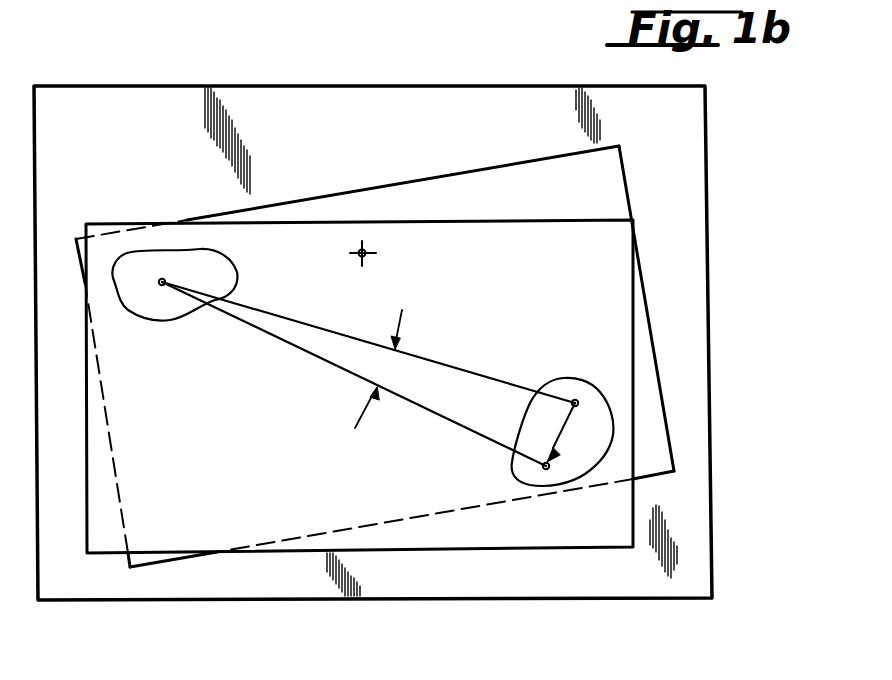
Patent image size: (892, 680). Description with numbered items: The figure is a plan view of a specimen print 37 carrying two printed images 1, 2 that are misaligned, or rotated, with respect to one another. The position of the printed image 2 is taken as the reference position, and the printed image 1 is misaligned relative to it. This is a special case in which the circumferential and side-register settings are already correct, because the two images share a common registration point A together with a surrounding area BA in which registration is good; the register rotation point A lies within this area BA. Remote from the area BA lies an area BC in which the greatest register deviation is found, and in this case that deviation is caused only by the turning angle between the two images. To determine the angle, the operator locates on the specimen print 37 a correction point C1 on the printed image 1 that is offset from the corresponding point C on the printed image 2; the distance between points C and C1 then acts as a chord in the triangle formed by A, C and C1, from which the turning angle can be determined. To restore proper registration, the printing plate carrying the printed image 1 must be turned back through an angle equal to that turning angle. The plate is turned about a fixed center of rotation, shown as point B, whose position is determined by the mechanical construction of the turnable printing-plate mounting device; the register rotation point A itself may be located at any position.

The printed image 1 is at (368, 200).
The printed image 2 is at (478, 535).
The specimen print 37 is at (683, 150).
The register rotation point A is at (160, 288).
The fixed center of rotation B is at (366, 257).
The point C is at (541, 467).
The correction point C1 is at (575, 398).
The area of good registration BA is at (165, 258).
The area of register deviation BC is at (582, 443).